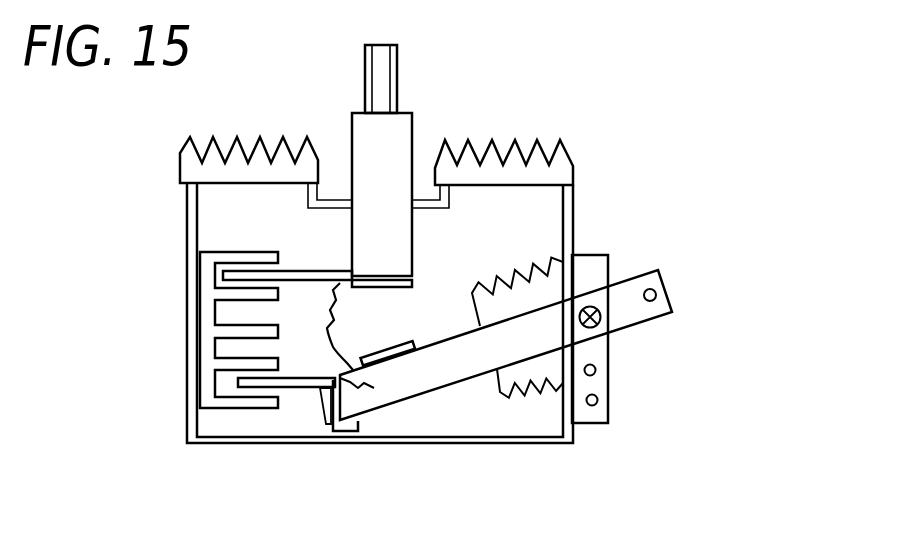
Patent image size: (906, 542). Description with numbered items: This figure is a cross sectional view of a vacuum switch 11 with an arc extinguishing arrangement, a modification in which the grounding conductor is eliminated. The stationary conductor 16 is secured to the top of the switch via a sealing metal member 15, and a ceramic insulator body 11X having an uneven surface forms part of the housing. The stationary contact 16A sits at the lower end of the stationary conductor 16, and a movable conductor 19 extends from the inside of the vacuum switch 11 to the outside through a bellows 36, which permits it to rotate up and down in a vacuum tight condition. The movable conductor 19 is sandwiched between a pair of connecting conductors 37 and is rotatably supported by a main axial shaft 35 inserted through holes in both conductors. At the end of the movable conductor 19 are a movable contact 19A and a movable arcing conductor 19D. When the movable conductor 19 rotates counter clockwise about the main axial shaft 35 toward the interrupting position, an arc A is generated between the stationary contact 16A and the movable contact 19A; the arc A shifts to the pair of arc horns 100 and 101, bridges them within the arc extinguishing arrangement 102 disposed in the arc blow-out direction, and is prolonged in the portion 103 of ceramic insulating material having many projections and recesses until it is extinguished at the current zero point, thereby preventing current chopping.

The vacuum switch 11 is at (548, 445).
The ceramic insulator body 11X is at (560, 157).
The sealing metal member 15 is at (337, 200).
The stationary conductor 16 is at (407, 130).
The stationary contact 16A is at (387, 280).
The arc horn 100 is at (310, 270).
The arc horn 101 is at (310, 384).
The arc extinguishing arrangement 102 is at (240, 382).
The portion made of ceramic insulating material 103 is at (230, 313).
The movable conductor 19 is at (637, 320).
The movable contact 19A is at (408, 333).
The movable arcing conductor 19D is at (374, 388).
The arc A is at (330, 327).
The main axial shaft 35 is at (592, 308).
The bellows 36 is at (540, 262).
The connecting conductors 37 is at (598, 402).